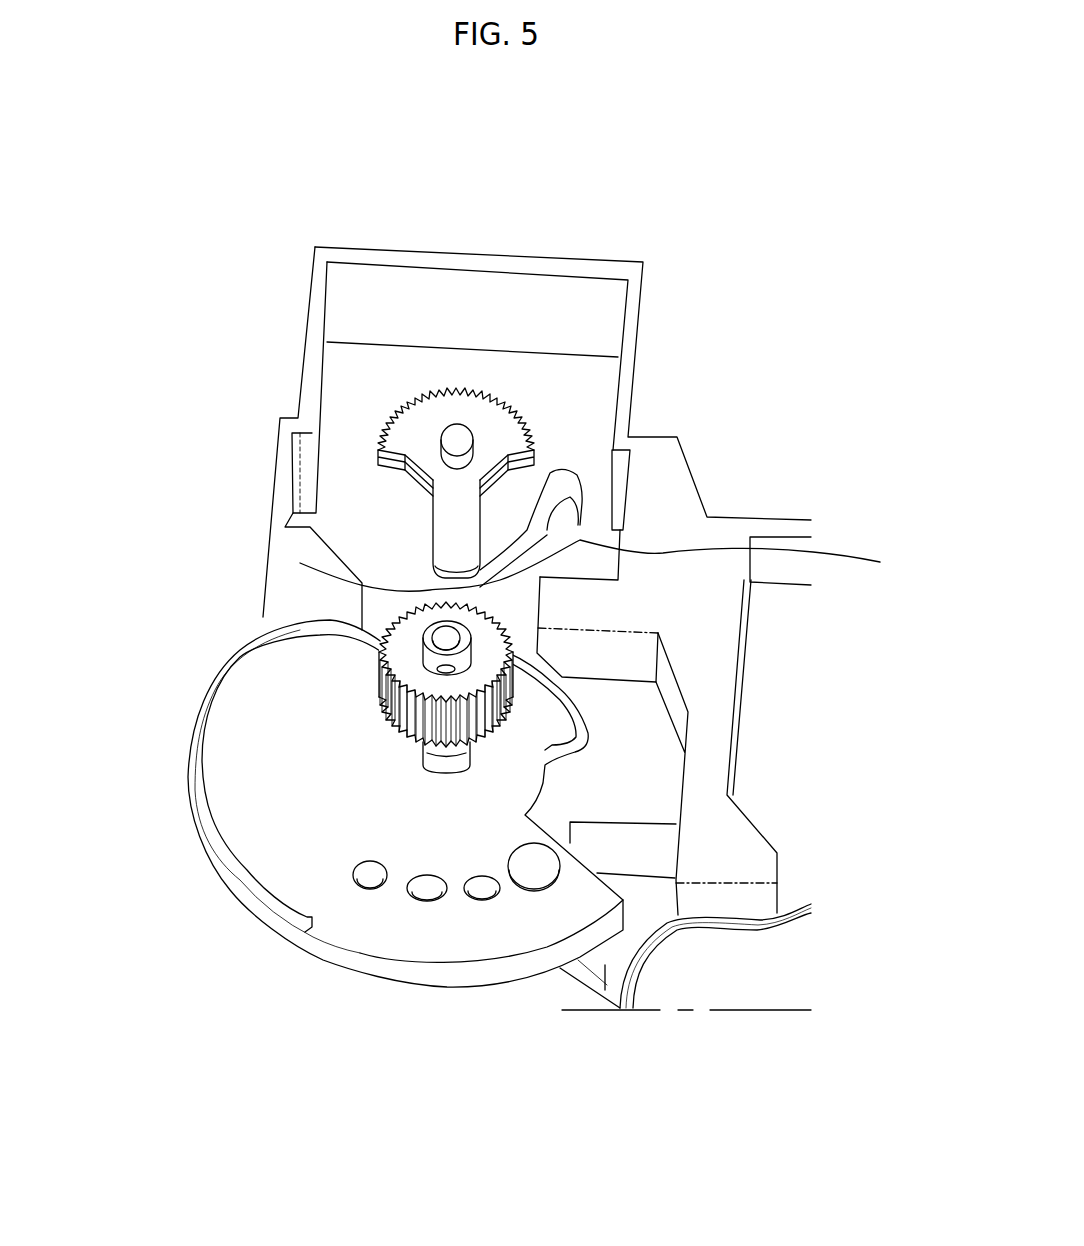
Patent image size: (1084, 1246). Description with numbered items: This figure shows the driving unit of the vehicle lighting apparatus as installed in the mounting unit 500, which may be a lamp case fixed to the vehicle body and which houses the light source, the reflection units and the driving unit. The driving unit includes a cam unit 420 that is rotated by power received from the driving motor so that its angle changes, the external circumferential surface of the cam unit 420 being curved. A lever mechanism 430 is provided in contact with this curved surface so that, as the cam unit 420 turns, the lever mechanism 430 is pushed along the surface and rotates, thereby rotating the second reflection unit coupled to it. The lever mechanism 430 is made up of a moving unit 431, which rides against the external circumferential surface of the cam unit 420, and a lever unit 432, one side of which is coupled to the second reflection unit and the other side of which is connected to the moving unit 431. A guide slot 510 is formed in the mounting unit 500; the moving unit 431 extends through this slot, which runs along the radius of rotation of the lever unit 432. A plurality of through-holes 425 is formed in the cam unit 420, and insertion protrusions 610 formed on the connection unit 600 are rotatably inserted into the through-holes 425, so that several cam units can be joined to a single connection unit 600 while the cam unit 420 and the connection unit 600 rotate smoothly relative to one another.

The mounting unit 500 is at (501, 240).
The guide slot 510 is at (880, 562).
The lever mechanism 430 is at (118, 458).
The moving unit 431 is at (300, 563).
The lever unit 432 is at (427, 471).
The cam unit 420 is at (345, 930).
The through-holes 425 is at (383, 873).
The connection unit 600 is at (605, 965).
The insertion protrusions 610 is at (533, 863).